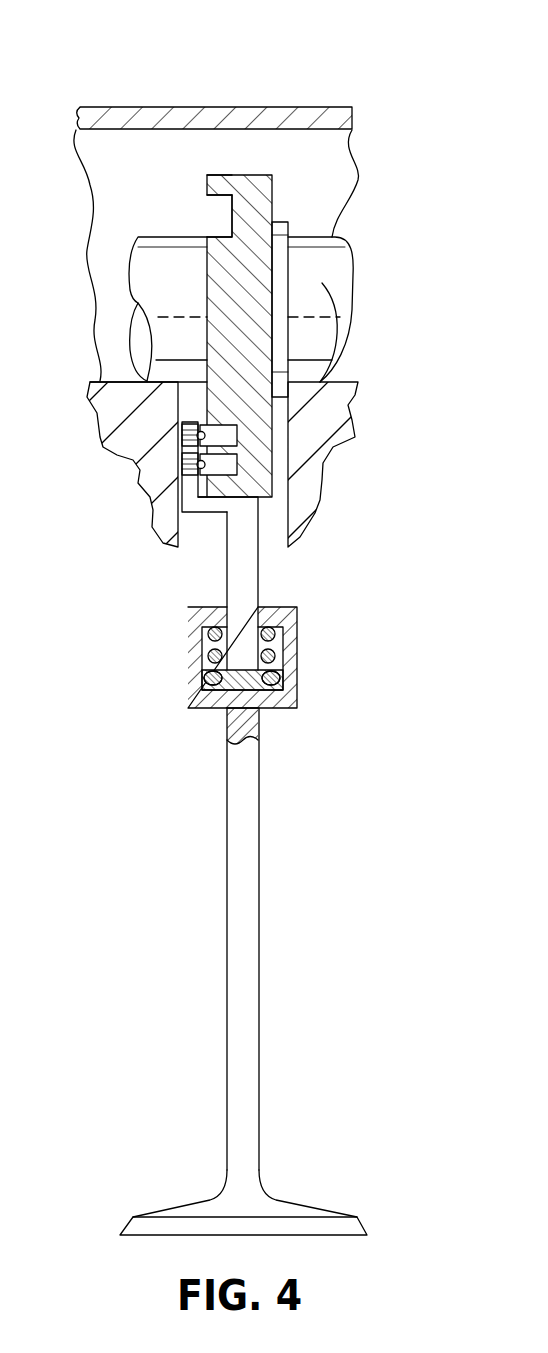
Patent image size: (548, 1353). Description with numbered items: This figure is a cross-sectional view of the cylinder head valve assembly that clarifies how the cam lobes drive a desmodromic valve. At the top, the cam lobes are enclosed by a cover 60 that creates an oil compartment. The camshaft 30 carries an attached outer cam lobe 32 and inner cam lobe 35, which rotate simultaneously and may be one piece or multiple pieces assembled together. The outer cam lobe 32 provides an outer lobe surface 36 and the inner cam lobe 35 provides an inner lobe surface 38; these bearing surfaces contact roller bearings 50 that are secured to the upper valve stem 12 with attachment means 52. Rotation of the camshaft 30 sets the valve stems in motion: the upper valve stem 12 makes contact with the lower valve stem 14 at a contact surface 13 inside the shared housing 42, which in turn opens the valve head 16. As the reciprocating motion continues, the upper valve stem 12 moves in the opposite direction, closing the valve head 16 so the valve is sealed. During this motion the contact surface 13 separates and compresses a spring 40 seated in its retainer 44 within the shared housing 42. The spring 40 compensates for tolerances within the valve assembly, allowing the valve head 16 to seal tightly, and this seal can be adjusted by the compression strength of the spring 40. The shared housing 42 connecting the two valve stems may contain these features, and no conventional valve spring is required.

The upper valve stem 12 is at (236, 550).
The contact surface 13 is at (247, 707).
The lower valve stem 14 is at (248, 825).
The valve head 16 is at (290, 1205).
The camshaft 30 is at (325, 198).
The outer cam lobe 32 is at (201, 173).
The inner cam lobe 35 is at (200, 264).
The outer lobe surface 36 is at (221, 185).
The inner lobe surface 38 is at (213, 232).
The spring 40 is at (201, 628).
The shared housing 42 is at (309, 677).
The retainer 44 is at (220, 700).
The roller bearings 50 is at (236, 440).
The attachment means 52 is at (181, 465).
The cover 60 is at (110, 112).